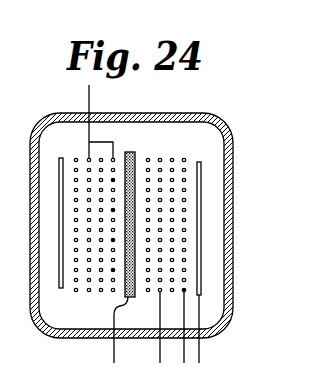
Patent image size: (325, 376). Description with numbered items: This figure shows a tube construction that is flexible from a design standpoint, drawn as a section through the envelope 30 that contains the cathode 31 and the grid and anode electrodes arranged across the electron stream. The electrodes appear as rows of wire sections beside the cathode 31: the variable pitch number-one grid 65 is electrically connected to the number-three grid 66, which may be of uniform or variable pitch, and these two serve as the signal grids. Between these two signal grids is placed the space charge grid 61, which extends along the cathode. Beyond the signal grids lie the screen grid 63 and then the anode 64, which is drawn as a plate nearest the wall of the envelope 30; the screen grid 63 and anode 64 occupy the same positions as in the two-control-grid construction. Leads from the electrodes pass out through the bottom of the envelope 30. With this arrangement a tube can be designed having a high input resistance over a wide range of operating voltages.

The envelope 30 is at (229, 243).
The cathode 31 is at (131, 152).
The space charge grid 61 is at (161, 158).
The screen grid 63 is at (186, 158).
The anode 64 is at (201, 204).
The variable pitch No. 1 grid 65 is at (149, 158).
The No. 3 grid 66 is at (173, 158).